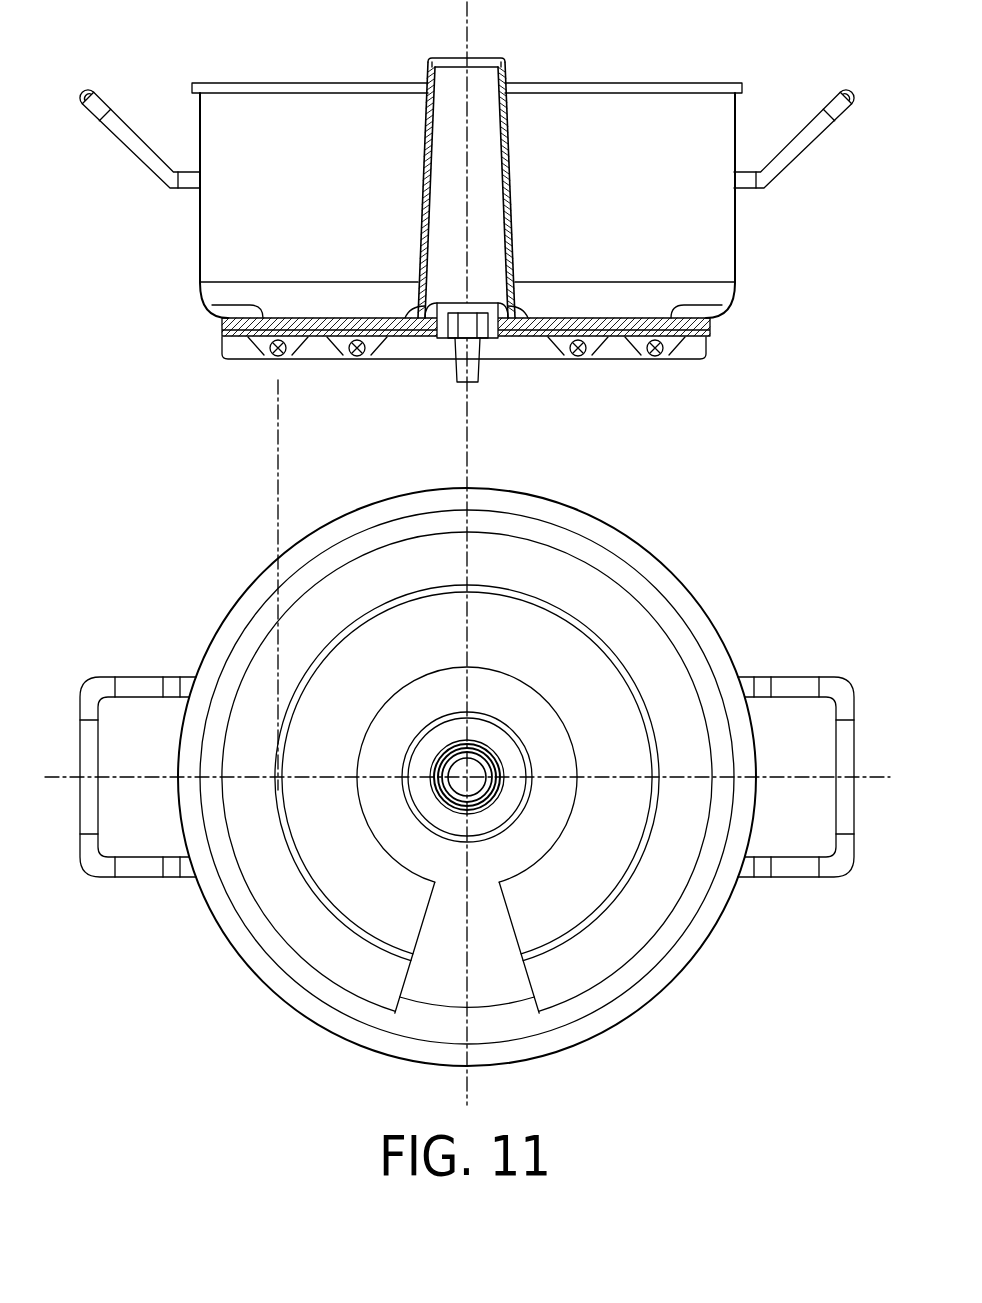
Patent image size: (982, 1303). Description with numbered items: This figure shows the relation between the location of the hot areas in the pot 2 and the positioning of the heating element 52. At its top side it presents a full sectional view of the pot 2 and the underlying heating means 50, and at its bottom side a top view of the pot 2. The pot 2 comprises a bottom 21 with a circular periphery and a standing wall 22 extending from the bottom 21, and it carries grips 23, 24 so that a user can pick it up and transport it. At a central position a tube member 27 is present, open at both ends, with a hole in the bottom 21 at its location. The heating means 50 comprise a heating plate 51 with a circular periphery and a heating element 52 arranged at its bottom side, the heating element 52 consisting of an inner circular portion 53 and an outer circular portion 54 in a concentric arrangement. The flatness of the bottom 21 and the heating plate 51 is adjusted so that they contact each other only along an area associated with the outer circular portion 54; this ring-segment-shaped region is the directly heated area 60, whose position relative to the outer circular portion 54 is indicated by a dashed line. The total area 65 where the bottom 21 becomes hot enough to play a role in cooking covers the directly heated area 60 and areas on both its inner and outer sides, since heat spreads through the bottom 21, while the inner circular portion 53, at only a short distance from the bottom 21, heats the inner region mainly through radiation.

The pot 2 is at (630, 104).
The bottom 21 is at (690, 303).
The standing wall 22 is at (736, 228).
The grip 23 is at (106, 100).
The grip 24 is at (828, 101).
The tube member 27 is at (422, 125).
The heating means 50 is at (710, 361).
The heating plate 51 is at (250, 304).
The heating element 52 is at (658, 361).
The inner circular portion 53 is at (570, 361).
The outer circular portion 54 is at (275, 361).
The directly heated area 60 is at (572, 940).
The total area 65 is at (639, 915).